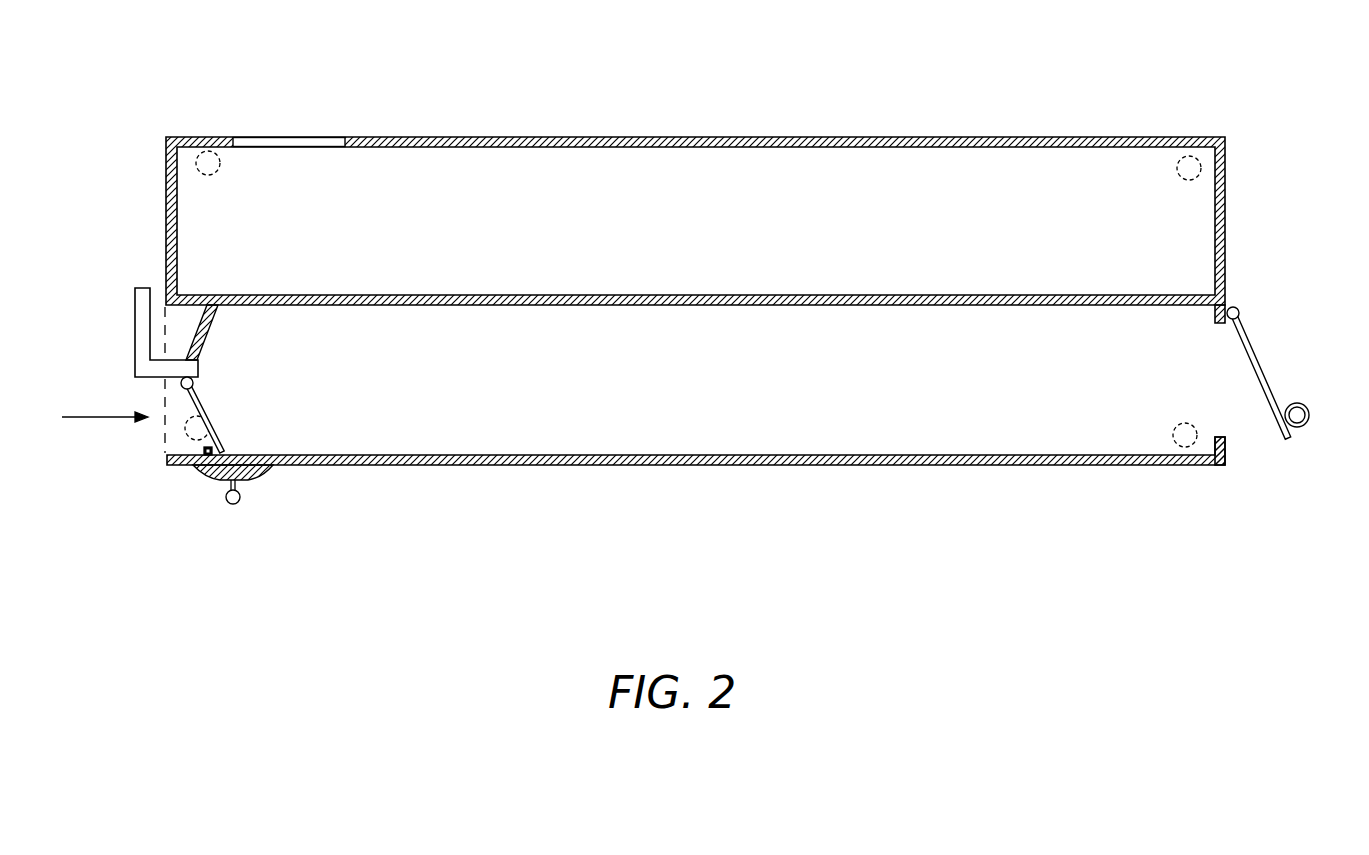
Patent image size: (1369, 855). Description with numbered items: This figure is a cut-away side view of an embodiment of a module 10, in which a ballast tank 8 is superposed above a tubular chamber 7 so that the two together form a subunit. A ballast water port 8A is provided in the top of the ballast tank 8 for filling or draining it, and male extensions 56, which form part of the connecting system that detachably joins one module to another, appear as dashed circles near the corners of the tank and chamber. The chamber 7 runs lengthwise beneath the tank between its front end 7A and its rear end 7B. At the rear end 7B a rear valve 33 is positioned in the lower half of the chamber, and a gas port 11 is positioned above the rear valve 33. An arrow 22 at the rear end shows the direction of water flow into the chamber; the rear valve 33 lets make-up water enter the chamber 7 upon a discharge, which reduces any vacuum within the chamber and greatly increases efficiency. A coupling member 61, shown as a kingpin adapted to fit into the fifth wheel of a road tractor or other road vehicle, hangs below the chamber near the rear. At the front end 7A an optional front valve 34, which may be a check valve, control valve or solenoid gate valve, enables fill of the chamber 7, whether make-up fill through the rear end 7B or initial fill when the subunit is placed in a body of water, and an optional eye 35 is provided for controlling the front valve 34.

The module 10 is at (771, 113).
The ballast tank 8 is at (603, 163).
The ballast water port 8A is at (270, 137).
The male extension 56 is at (192, 159).
The tubular chamber 7 is at (840, 427).
The front end 7A is at (1223, 398).
The rear end 7B is at (158, 432).
The arrow 22 is at (102, 425).
The gas port 11 is at (135, 325).
The rear valve 33 is at (218, 453).
The coupling member 61 is at (225, 512).
The front valve 34 is at (1260, 372).
The eye 35 is at (1305, 401).